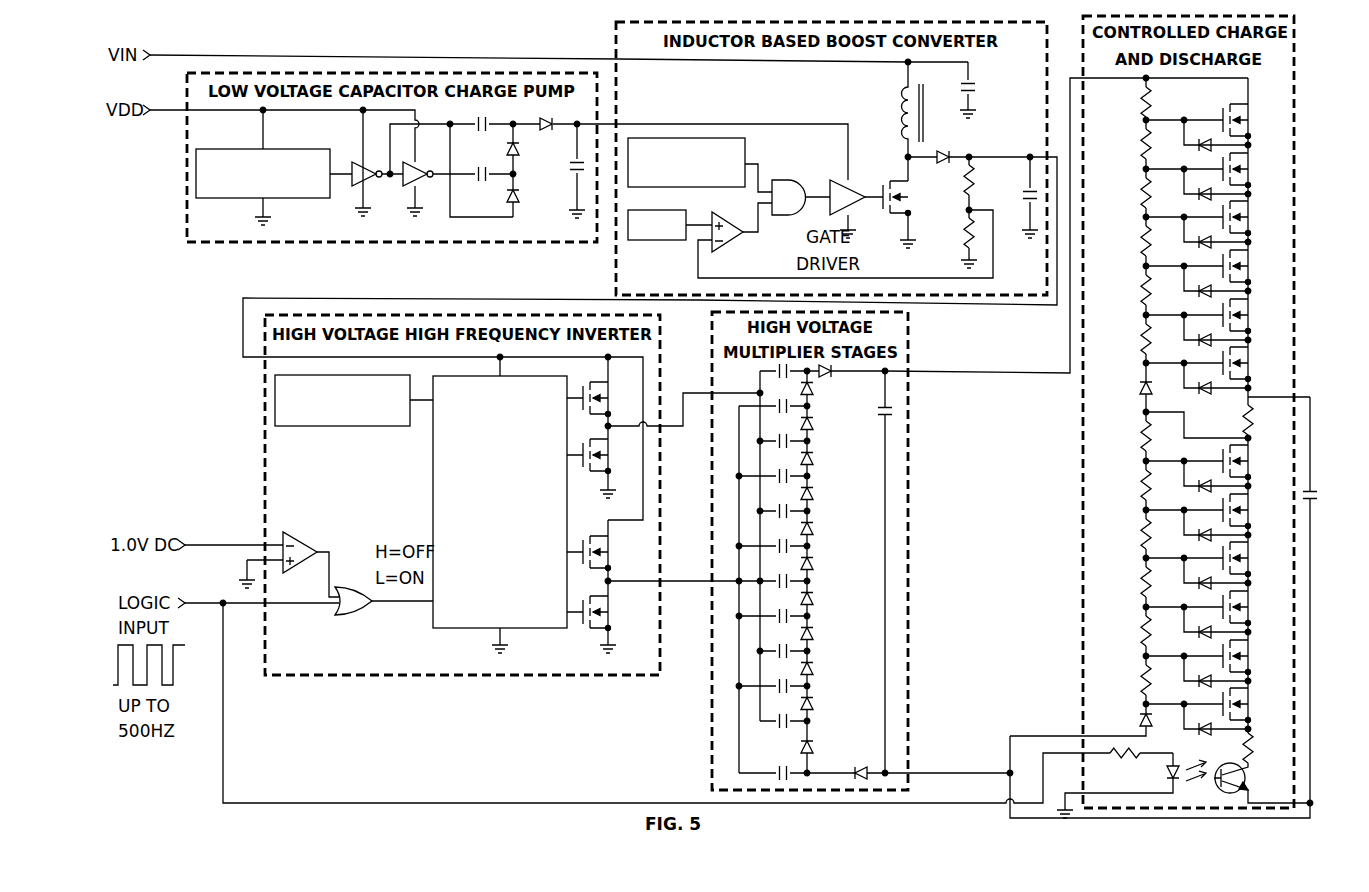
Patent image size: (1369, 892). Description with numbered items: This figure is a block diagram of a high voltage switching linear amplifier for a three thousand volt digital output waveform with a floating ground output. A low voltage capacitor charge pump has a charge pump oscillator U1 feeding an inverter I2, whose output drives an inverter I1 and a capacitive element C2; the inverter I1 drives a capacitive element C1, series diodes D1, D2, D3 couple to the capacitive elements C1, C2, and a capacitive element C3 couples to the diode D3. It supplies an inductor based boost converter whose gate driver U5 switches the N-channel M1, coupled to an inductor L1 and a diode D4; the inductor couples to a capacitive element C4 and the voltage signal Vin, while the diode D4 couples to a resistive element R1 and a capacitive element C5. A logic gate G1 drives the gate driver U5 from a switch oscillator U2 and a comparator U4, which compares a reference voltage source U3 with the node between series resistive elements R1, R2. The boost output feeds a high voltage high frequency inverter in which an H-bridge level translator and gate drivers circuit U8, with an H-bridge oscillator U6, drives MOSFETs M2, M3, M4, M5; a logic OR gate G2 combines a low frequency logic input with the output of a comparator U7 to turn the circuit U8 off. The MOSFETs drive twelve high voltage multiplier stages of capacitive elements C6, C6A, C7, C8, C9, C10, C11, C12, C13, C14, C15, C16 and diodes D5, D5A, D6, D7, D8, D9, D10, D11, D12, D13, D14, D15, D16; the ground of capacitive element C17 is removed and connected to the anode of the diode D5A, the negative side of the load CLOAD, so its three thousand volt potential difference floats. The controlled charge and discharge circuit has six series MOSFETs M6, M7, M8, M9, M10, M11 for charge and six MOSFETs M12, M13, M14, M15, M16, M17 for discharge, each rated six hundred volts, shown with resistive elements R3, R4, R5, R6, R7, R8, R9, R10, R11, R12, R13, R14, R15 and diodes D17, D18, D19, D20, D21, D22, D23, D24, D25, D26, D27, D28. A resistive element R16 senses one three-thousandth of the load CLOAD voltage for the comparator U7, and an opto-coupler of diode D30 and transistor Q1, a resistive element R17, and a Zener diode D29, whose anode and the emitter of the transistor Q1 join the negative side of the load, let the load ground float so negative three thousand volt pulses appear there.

The charge pump oscillator U1 is at (263, 184).
The inverter I1 is at (415, 163).
The inverter I2 is at (361, 163).
The capacitive element C1 is at (482, 185).
The capacitive element C2 is at (482, 135).
The capacitive element C3 is at (568, 171).
The diode D1 is at (526, 195).
The diode D2 is at (526, 149).
The diode D3 is at (548, 136).
The switch oscillator U2 is at (686, 173).
The reference voltage source U3 is at (657, 236).
The comparator U4 is at (728, 240).
The gate driver U5 is at (843, 196).
The logic gate G1 is at (801, 186).
The inductor L1 is at (900, 121).
The capacitive element C4 is at (982, 90).
The diode D4 is at (945, 145).
The N-channel MOSFET M1 is at (902, 214).
The resistive element R1 is at (956, 187).
The resistive element R2 is at (958, 243).
The capacitive element C5 is at (1019, 197).
The H-bridge oscillator U6 is at (342, 411).
The comparator U7 is at (296, 541).
The H-bridge level translator and gate drivers circuit U8 is at (500, 513).
The logic OR gate G2 is at (353, 612).
The MOSFET M2 is at (603, 391).
The MOSFET M3 is at (603, 462).
The MOSFET M4 is at (603, 550).
The MOSFET M5 is at (603, 617).
The capacitive element C6 is at (783, 732).
The capacitive element C6A is at (773, 766).
The capacitive element C7 is at (773, 697).
The capacitive element C8 is at (783, 662).
The capacitive element C9 is at (773, 627).
The multiplier capacitor C10 is at (783, 592).
The multiplier capacitor C11 is at (773, 557).
The multiplier capacitor C12 is at (783, 522).
The multiplier capacitor C13 is at (773, 487).
The multiplier capacitor C14 is at (783, 452).
The multiplier capacitor C15 is at (773, 417).
The multiplier capacitor C16 is at (783, 382).
The capacitive element C17 is at (868, 572).
The diode D5 is at (820, 755).
The diode D5A is at (846, 760).
The diode D6 is at (820, 714).
The diode D7 is at (820, 679).
The diode D8 is at (820, 644).
The multiplier diode D9 is at (820, 609).
The multiplier diode D10 is at (826, 574).
The multiplier diode D11 is at (826, 539).
The multiplier diode D12 is at (826, 504).
The multiplier diode D13 is at (826, 469).
The multiplier diode D14 is at (826, 434).
The multiplier diode D15 is at (826, 399).
The output diode D16 is at (846, 379).
The resistor R3 is at (1129, 102).
The resistor R4 is at (1129, 144).
The resistor R5 is at (1129, 193).
The resistor R6 is at (1129, 241).
The resistor R7 is at (1129, 290).
The resistor R8 is at (1129, 339).
The resistor R9 is at (1262, 418).
The resistor R10 is at (1124, 436).
The resistor R11 is at (1124, 485).
The resistor R12 is at (1124, 534).
The resistor R13 is at (1124, 582).
The resistor R14 is at (1124, 631).
The resistor R15 is at (1124, 680).
The resistive element R16 is at (1267, 748).
The resistive element R17 is at (1130, 763).
The gate protection diode D17 is at (1208, 144).
The gate protection diode D18 is at (1208, 193).
The gate protection diode D19 is at (1208, 241).
The gate protection diode D20 is at (1208, 290).
The gate protection diode D21 is at (1208, 339).
The gate protection diode D22 is at (1208, 387).
The diode D23 is at (1127, 391).
The gate protection diode D24 is at (1208, 485).
The gate protection diode D25 is at (1208, 534).
The gate protection diode D26 is at (1208, 582).
The gate protection diode D27 is at (1208, 631).
The gate protection diode D28 is at (1208, 680).
The Zener diode D29 is at (1125, 722).
The diode D30 is at (1131, 785).
The MOSFET M6 is at (1214, 121).
The MOSFET M7 is at (1214, 170).
The MOSFET M8 is at (1214, 218).
The MOSFET M9 is at (1214, 267).
The MOSFET M10 is at (1219, 316).
The MOSFET M11 is at (1219, 364).
The MOSFET M12 is at (1219, 462).
The MOSFET M13 is at (1219, 511).
The MOSFET M14 is at (1219, 559).
The MOSFET M15 is at (1219, 608).
The MOSFET M16 is at (1219, 657).
The MOSFET M17 is at (1219, 705).
The transistor Q1 is at (1262, 783).
The load CLOAD is at (1336, 600).